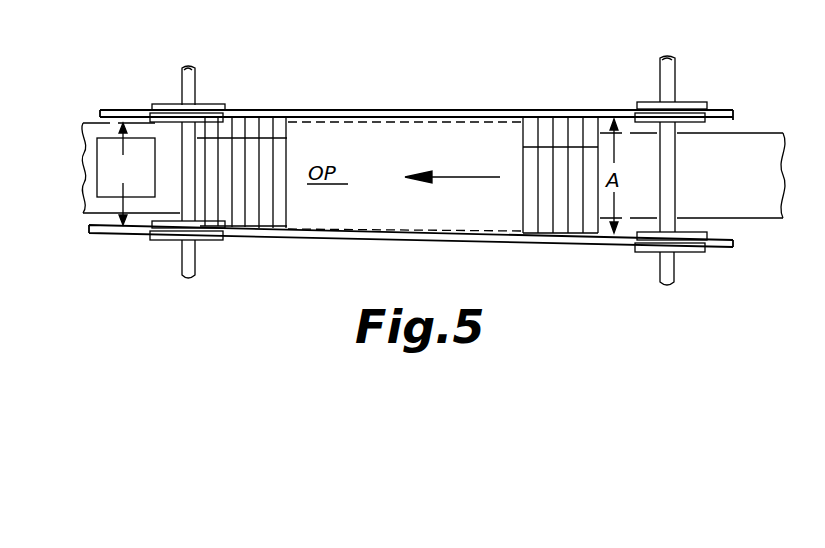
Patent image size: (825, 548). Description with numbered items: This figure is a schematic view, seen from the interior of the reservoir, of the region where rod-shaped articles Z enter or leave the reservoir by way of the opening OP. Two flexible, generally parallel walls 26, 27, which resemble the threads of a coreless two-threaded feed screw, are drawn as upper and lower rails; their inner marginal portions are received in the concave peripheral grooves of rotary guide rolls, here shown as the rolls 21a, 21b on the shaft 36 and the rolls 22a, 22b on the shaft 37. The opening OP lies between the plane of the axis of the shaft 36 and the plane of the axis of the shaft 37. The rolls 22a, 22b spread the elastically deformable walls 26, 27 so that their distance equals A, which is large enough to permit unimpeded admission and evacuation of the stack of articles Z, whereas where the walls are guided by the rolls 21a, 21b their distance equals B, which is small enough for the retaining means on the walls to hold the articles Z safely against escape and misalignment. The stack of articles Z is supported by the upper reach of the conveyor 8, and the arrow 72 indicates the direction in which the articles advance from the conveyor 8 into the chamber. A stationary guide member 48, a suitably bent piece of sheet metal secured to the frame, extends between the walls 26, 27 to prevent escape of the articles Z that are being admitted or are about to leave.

The conveyor 8 is at (97, 207).
The roll 21a is at (207, 242).
The roll 21b is at (167, 104).
The roll 22a is at (688, 252).
The roll 22b is at (645, 102).
The wall 26 is at (408, 238).
The wall 27 is at (408, 113).
The shaft 36 is at (192, 78).
The shaft 37 is at (668, 78).
The guide member 48 is at (107, 150).
The arrow 72 is at (490, 160).
The article Z is at (252, 131).